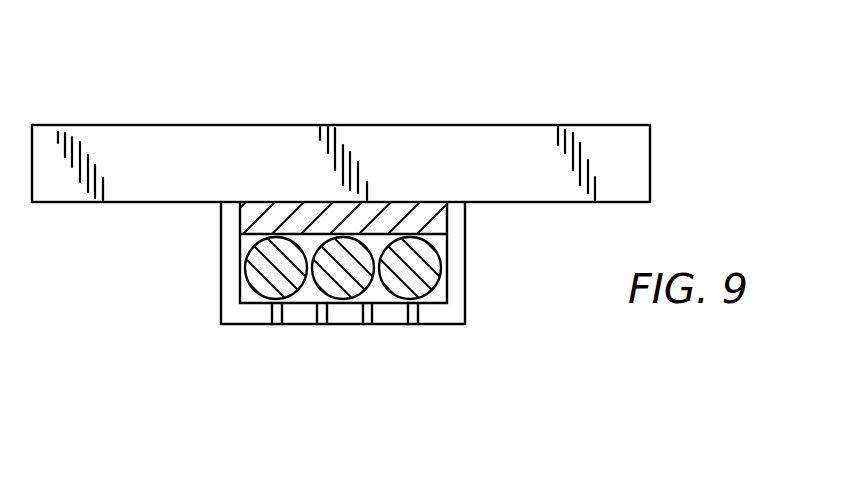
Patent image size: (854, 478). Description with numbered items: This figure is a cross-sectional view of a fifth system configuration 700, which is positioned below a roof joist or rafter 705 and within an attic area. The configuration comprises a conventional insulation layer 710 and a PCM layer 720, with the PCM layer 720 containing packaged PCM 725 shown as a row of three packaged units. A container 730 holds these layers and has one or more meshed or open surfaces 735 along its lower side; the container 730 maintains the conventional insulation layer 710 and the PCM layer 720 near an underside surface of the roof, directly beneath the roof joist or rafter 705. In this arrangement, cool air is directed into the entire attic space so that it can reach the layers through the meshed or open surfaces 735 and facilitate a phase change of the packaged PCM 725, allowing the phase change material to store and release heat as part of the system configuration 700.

The fifth system configuration 700 is at (663, 120).
The roof joist or rafter 705 is at (633, 173).
The conventional insulation layer 710 is at (440, 212).
The PCM layer 720 is at (443, 295).
The packaged PCM 725 is at (258, 268).
The container 730 is at (457, 317).
The meshed or open surfaces 735 is at (368, 333).